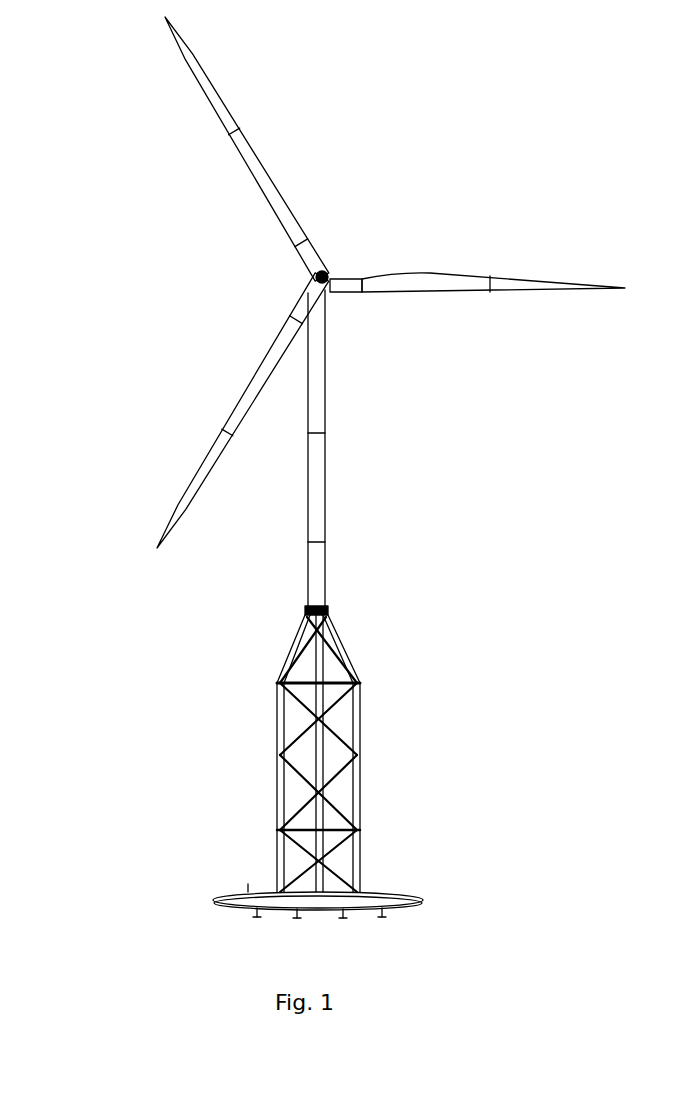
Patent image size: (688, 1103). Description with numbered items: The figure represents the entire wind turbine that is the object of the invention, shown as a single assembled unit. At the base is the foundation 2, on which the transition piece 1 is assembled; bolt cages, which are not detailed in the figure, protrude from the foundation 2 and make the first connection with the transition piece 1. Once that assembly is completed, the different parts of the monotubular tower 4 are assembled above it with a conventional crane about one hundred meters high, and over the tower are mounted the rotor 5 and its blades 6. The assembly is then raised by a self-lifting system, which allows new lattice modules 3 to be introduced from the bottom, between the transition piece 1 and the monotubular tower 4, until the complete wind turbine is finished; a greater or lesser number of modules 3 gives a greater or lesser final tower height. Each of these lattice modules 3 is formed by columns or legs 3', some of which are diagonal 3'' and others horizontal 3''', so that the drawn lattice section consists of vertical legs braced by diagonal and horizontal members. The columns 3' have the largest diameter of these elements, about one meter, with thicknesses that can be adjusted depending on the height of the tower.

The transition piece 1 is at (333, 637).
The foundation 2 is at (375, 892).
The lattice modules 3 is at (187, 753).
The columns or legs 3' is at (237, 861).
The diagonal columns 3'' is at (236, 812).
The horizontal columns 3''' is at (242, 766).
The monotubular tower 4 is at (455, 448).
The rotor 5 is at (326, 273).
The blades 6 is at (353, 282).